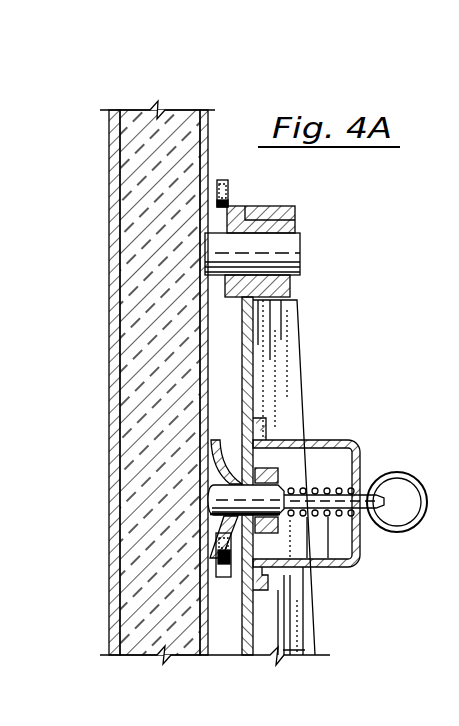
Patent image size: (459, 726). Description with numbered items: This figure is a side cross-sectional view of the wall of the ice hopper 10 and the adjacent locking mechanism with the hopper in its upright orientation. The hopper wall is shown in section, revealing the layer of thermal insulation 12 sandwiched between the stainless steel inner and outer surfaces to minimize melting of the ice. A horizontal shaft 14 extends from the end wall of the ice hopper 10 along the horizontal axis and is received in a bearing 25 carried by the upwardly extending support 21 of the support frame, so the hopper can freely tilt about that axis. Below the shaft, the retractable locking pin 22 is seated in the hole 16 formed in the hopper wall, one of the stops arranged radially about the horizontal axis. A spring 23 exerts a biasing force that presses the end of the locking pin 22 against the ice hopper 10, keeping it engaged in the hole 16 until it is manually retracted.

The ice hopper 10 is at (98, 278).
The thermal insulation 12 is at (150, 138).
The horizontal shaft 14 is at (300, 253).
The hole 16 is at (273, 433).
The support 21 is at (283, 375).
The locking pin 22 is at (283, 475).
The spring 23 is at (323, 560).
The bearing 25 is at (296, 226).